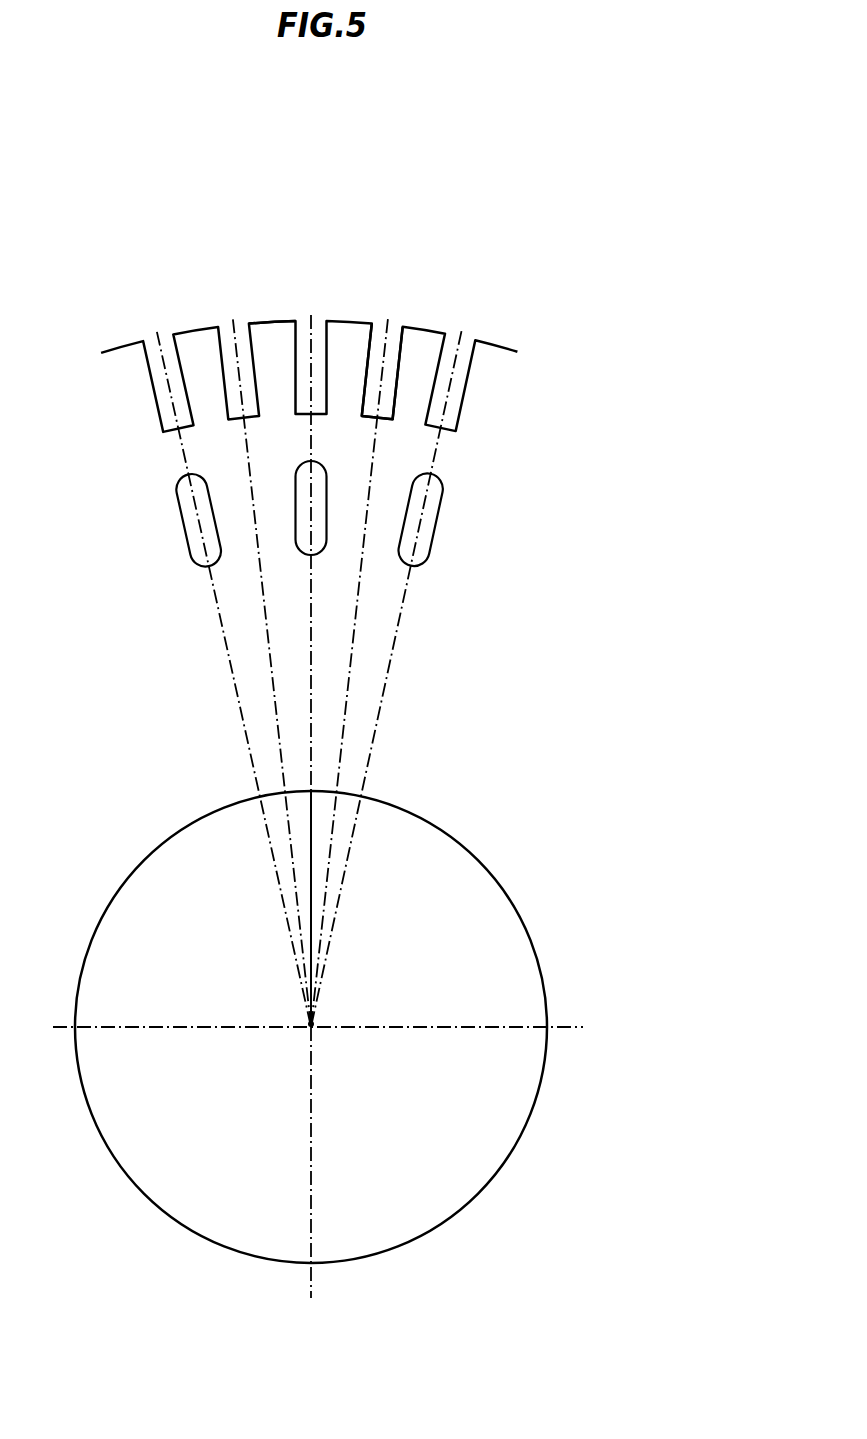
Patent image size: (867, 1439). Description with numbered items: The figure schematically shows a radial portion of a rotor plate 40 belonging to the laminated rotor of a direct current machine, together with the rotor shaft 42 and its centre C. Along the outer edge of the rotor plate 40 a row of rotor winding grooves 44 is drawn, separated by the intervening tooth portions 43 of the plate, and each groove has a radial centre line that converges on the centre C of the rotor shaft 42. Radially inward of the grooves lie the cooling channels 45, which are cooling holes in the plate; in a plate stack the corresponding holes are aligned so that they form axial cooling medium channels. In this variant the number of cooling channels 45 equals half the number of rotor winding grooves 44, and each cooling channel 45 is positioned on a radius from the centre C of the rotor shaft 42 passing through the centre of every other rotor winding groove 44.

The rotor plate 40 is at (493, 380).
The rotor shaft 42 is at (437, 947).
The slot 43 is at (266, 343).
The rotor winding groove 44 is at (395, 333).
The cooling channel 45 is at (430, 547).
The centre of the rotor shaft C is at (317, 1030).